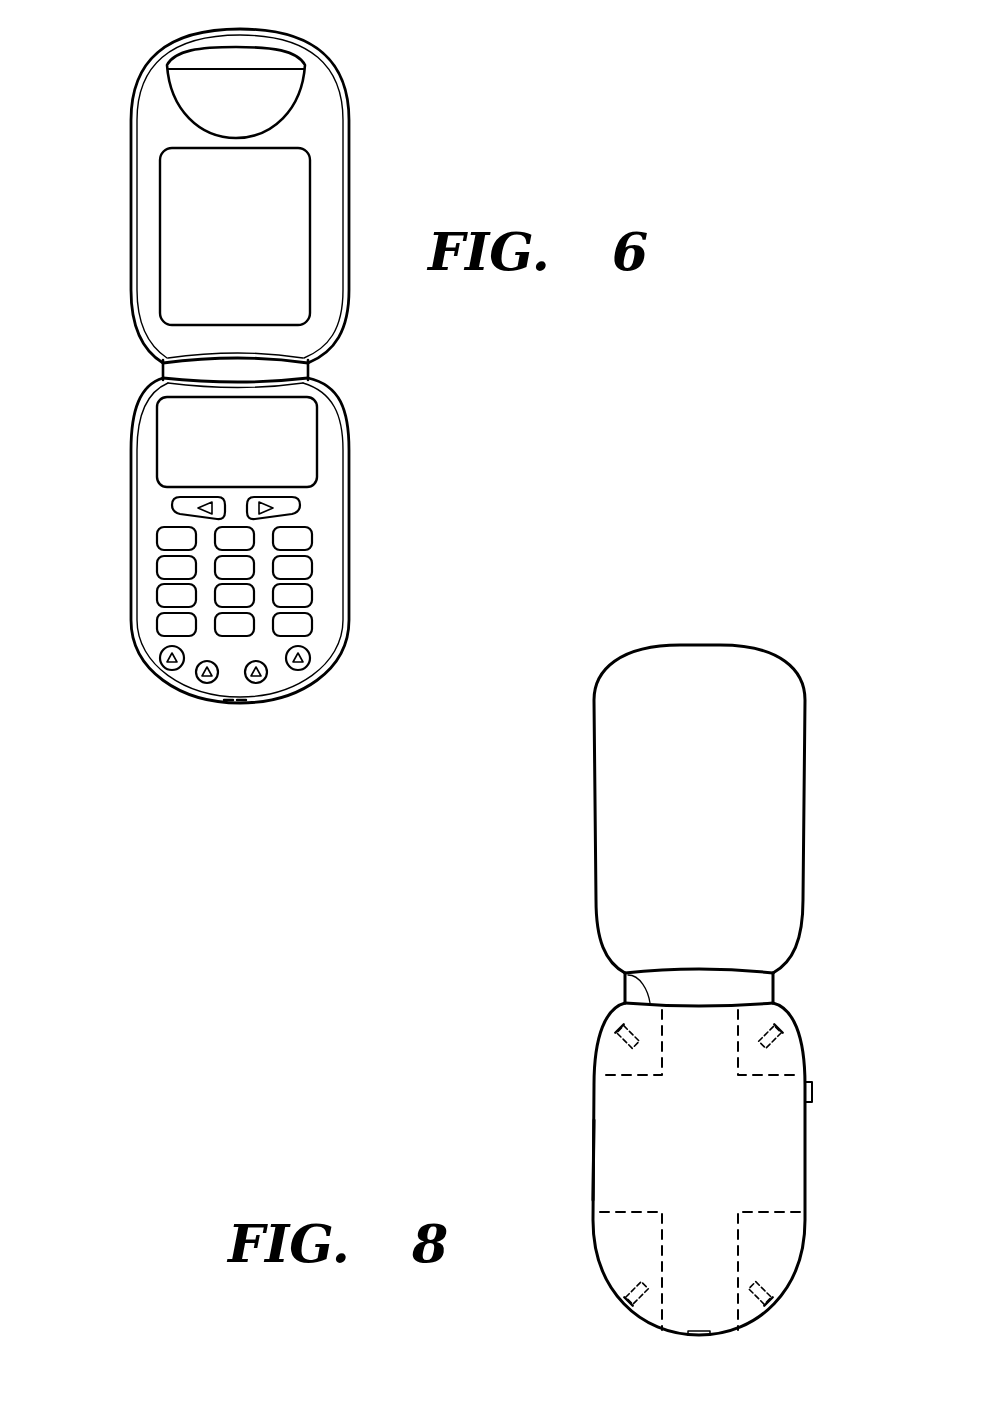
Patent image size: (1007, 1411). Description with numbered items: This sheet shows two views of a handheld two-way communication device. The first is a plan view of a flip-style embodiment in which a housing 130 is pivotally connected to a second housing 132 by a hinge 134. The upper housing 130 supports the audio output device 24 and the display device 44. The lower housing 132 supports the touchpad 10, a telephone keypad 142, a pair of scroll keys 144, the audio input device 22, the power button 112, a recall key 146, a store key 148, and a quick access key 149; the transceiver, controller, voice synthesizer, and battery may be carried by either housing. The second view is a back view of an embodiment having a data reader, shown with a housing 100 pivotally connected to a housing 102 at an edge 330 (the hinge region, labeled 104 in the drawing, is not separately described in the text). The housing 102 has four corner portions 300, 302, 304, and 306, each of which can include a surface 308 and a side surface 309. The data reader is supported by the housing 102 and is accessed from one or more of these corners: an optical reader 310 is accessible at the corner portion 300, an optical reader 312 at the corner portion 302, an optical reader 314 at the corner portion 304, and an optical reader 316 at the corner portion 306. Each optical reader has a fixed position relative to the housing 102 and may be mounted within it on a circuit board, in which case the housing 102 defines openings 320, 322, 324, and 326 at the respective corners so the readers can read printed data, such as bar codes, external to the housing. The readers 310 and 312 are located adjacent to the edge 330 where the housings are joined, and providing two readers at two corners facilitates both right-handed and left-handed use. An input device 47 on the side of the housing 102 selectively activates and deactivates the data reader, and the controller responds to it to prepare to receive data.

In FIG. 6, the audio output device 24 is at (197, 50).
In FIG. 6, the housing 130 is at (133, 105).
In FIG. 6, the display device 44 is at (158, 205).
In FIG. 6, the hinge 134 is at (162, 372).
In FIG. 6, the housing 132 is at (135, 398).
In FIG. 6, the touchpad 10 is at (158, 447).
In FIG. 6, the scroll keys 144 is at (173, 505).
In FIG. 6, the telephone keypad 142 is at (345, 568).
In FIG. 6, the power button 112 is at (160, 658).
In FIG. 6, the recall key 146 is at (197, 675).
In FIG. 6, the store key 148 is at (268, 673).
In FIG. 6, the quick access key 149 is at (308, 655).
In FIG. 6, the audio input device 22 is at (272, 703).
In FIG. 8, the housing 100 is at (806, 738).
In FIG. 8, the hinge 104 is at (777, 978).
In FIG. 8, the edge 330 is at (648, 1003).
In FIG. 8, the housing 102 is at (807, 1132).
In FIG. 8, the side surface 309 is at (592, 1147).
In FIG. 8, the surface 308 is at (625, 1117).
In FIG. 8, the input device 47 is at (813, 1088).
In FIG. 8, the corner portion 300 is at (628, 1012).
In FIG. 8, the corner portion 302 is at (783, 1007).
In FIG. 8, the corner portion 304 is at (607, 1225).
In FIG. 8, the corner portion 306 is at (785, 1228).
In FIG. 8, the optical reader 310 is at (625, 1043).
In FIG. 8, the optical reader 312 is at (775, 1043).
In FIG. 8, the opening 324 is at (622, 1298).
In FIG. 8, the opening 326 is at (773, 1307).
In FIG. 8, the opening 320 is at (600, 1022).
In FIG. 8, the opening 322 is at (805, 1018).
In FIG. 8, the optical reader 314 is at (620, 1280).
In FIG. 8, the optical reader 316 is at (767, 1280).